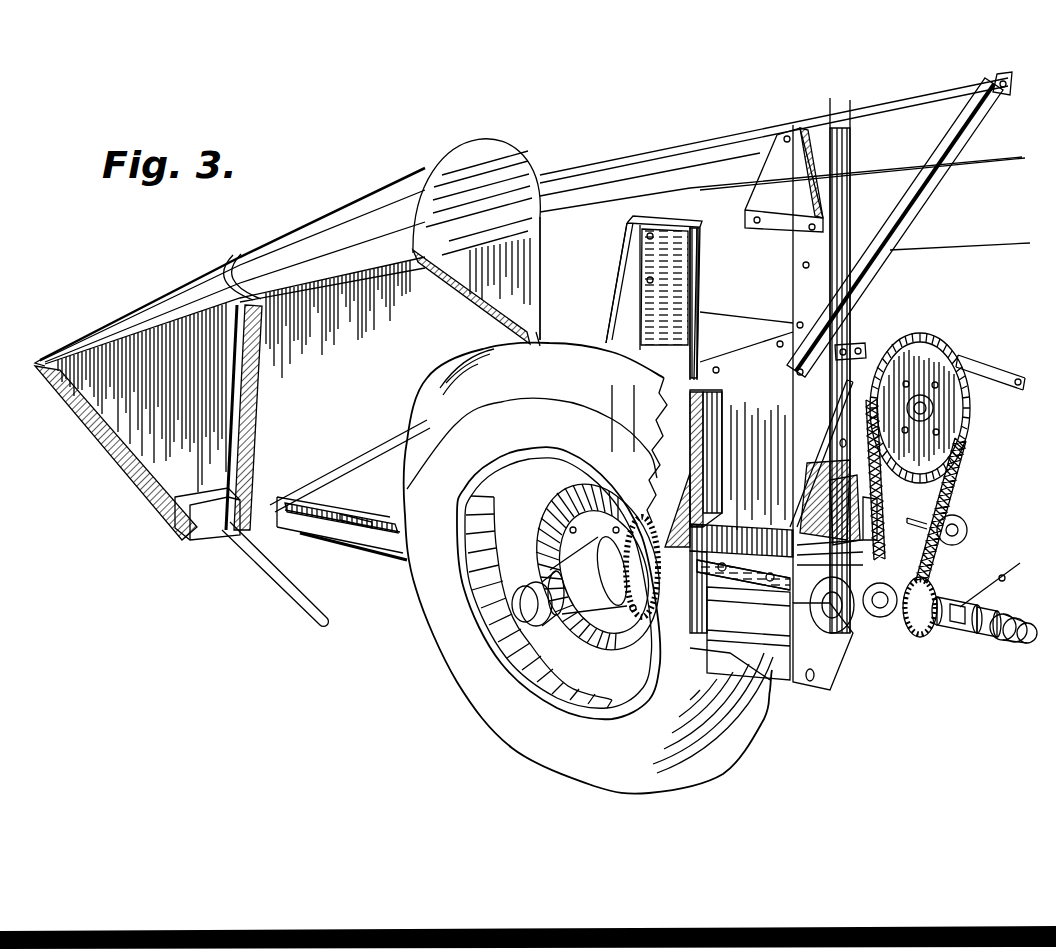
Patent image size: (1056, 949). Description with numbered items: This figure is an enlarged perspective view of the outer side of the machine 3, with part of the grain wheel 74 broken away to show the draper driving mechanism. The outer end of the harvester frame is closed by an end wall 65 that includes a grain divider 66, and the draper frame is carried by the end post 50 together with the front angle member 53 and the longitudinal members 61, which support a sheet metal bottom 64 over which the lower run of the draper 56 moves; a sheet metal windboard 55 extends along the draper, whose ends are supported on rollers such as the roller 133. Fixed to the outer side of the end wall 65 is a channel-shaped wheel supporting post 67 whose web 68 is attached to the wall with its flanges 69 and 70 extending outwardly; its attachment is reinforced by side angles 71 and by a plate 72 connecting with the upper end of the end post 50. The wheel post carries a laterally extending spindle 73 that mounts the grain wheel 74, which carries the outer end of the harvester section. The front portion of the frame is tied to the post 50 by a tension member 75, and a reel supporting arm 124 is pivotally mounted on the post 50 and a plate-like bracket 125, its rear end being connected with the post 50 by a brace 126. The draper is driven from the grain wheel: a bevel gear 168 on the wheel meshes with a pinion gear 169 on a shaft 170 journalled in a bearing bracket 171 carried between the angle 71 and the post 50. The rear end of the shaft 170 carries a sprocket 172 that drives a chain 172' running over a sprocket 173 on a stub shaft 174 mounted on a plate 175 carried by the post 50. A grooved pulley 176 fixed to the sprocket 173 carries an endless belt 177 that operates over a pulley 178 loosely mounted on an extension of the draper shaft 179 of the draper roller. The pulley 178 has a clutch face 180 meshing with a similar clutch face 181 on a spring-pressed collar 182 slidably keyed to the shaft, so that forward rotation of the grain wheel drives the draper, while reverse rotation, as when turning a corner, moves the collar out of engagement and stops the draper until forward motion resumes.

The grain divider 66 is at (158, 304).
The reel supporting arm 124 is at (590, 172).
The end wall 65 is at (548, 278).
The roller 133 is at (322, 492).
The front angle member 53 is at (272, 528).
The draper 56 is at (358, 523).
The sheet metal bottom 64 is at (350, 542).
The longitudinal members 61 is at (383, 567).
The grain wheel 74 is at (438, 616).
The bevel gear 168 is at (640, 656).
The spindle 73 is at (530, 630).
The shaft 170 is at (790, 620).
The web 68 is at (670, 225).
The flange 69 is at (614, 306).
The plate 72 is at (720, 247).
The flange 70 is at (700, 313).
The wheel supporting post 67 is at (698, 355).
The side angles 71 is at (717, 423).
The pinion gear 169 is at (710, 490).
The bearing bracket 171 is at (748, 505).
The end post 50 is at (848, 180).
The sprocket 172 is at (847, 646).
The plate-like bracket 125 is at (775, 150).
The tension member 75 is at (915, 108).
The brace 126 is at (912, 188).
The frame 3 is at (975, 152).
The windboard 55 is at (930, 312).
The pulley 176 is at (960, 365).
The stub shaft 174 is at (935, 405).
The sprocket 173 is at (868, 348).
The endless belt 177 is at (948, 483).
The plate 175 is at (830, 415).
The chain 172' is at (801, 488).
The pulley 178 is at (920, 640).
The clutch face 180 is at (947, 637).
The spring-pressed collar 182 is at (977, 610).
The draper shaft 179 is at (1022, 648).
The clutch face 181 is at (960, 607).